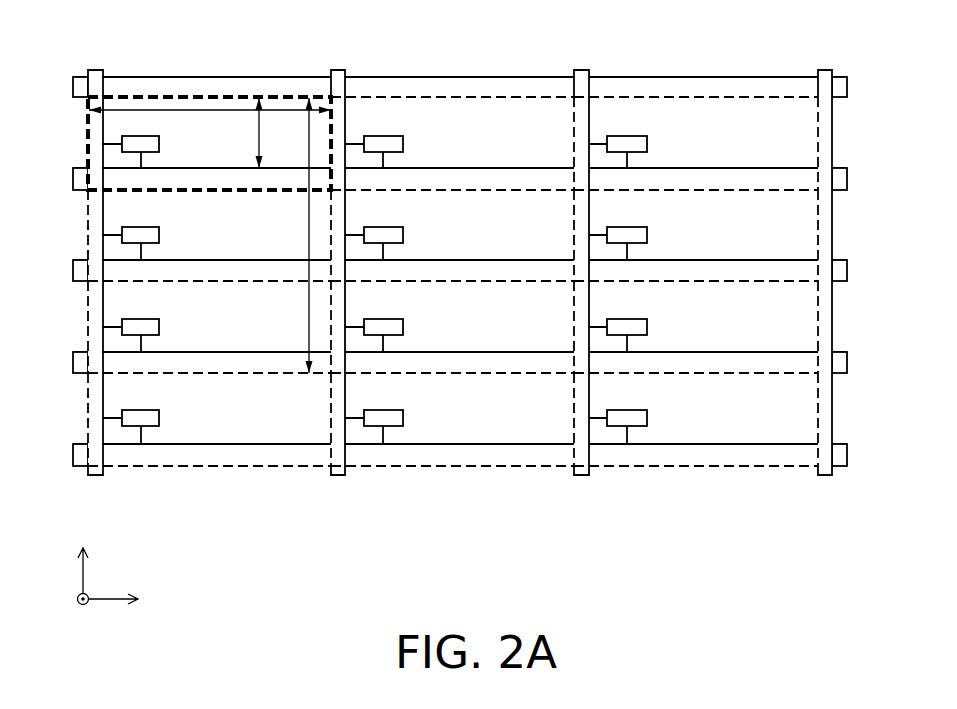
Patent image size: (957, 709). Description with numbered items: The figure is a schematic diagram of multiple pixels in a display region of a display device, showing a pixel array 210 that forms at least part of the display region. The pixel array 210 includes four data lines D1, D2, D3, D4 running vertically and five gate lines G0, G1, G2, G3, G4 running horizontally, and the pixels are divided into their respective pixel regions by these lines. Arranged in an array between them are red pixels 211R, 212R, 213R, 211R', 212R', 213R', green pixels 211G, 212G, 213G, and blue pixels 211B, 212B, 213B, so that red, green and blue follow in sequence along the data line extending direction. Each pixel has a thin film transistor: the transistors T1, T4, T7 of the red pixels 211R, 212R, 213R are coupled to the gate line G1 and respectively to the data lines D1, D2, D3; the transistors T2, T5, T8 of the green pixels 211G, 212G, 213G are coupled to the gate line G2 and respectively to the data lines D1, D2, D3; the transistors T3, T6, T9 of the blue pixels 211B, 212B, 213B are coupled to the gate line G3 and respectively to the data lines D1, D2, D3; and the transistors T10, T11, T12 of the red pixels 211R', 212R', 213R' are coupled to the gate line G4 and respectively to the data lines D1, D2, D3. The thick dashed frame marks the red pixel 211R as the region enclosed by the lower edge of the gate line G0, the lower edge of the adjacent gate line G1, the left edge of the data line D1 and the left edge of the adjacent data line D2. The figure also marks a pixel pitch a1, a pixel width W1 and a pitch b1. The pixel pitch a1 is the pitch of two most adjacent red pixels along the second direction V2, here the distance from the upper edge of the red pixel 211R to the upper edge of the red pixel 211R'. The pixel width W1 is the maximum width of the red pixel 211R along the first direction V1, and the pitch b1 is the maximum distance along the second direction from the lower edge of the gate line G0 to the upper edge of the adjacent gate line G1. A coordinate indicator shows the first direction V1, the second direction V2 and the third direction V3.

The pixel array 210 is at (892, 561).
The data line D1 is at (92, 68).
The data line D2 is at (336, 68).
The data line D3 is at (579, 68).
The data line D4 is at (823, 68).
The gate line G0 is at (73, 87).
The gate line G1 is at (73, 179).
The gate line G2 is at (73, 271).
The gate line G3 is at (73, 363).
The gate line G4 is at (73, 456).
The thin film transistor T1 is at (137, 136).
The thin film transistor T2 is at (141, 227).
The thin film transistor T3 is at (141, 319).
The thin film transistor T4 is at (383, 136).
The thin film transistor T5 is at (383, 227).
The thin film transistor T6 is at (383, 319).
The thin film transistor T7 is at (627, 136).
The thin film transistor T8 is at (627, 227).
The thin film transistor T9 is at (627, 319).
The thin film transistor T10 is at (139, 410).
The thin film transistor T11 is at (383, 410).
The thin film transistor T12 is at (627, 410).
The red pixel 211R is at (171, 143).
The green pixel 211G is at (88, 229).
The blue pixel 211B is at (88, 323).
The red pixel 211R' is at (171, 419).
The red pixel 212R is at (452, 98).
The green pixel 212G is at (542, 282).
The blue pixel 212B is at (466, 373).
The red pixel 212R' is at (452, 465).
The red pixel 213R is at (739, 143).
The green pixel 213G is at (818, 235).
The blue pixel 213B is at (818, 322).
The red pixel 213R' is at (742, 419).
The pixel width W1 is at (210, 125).
The pixel pitch a1 is at (297, 235).
The pitch b1 is at (245, 133).
The first direction V1 is at (130, 602).
The second direction V2 is at (83, 551).
The third direction V3 is at (65, 613).